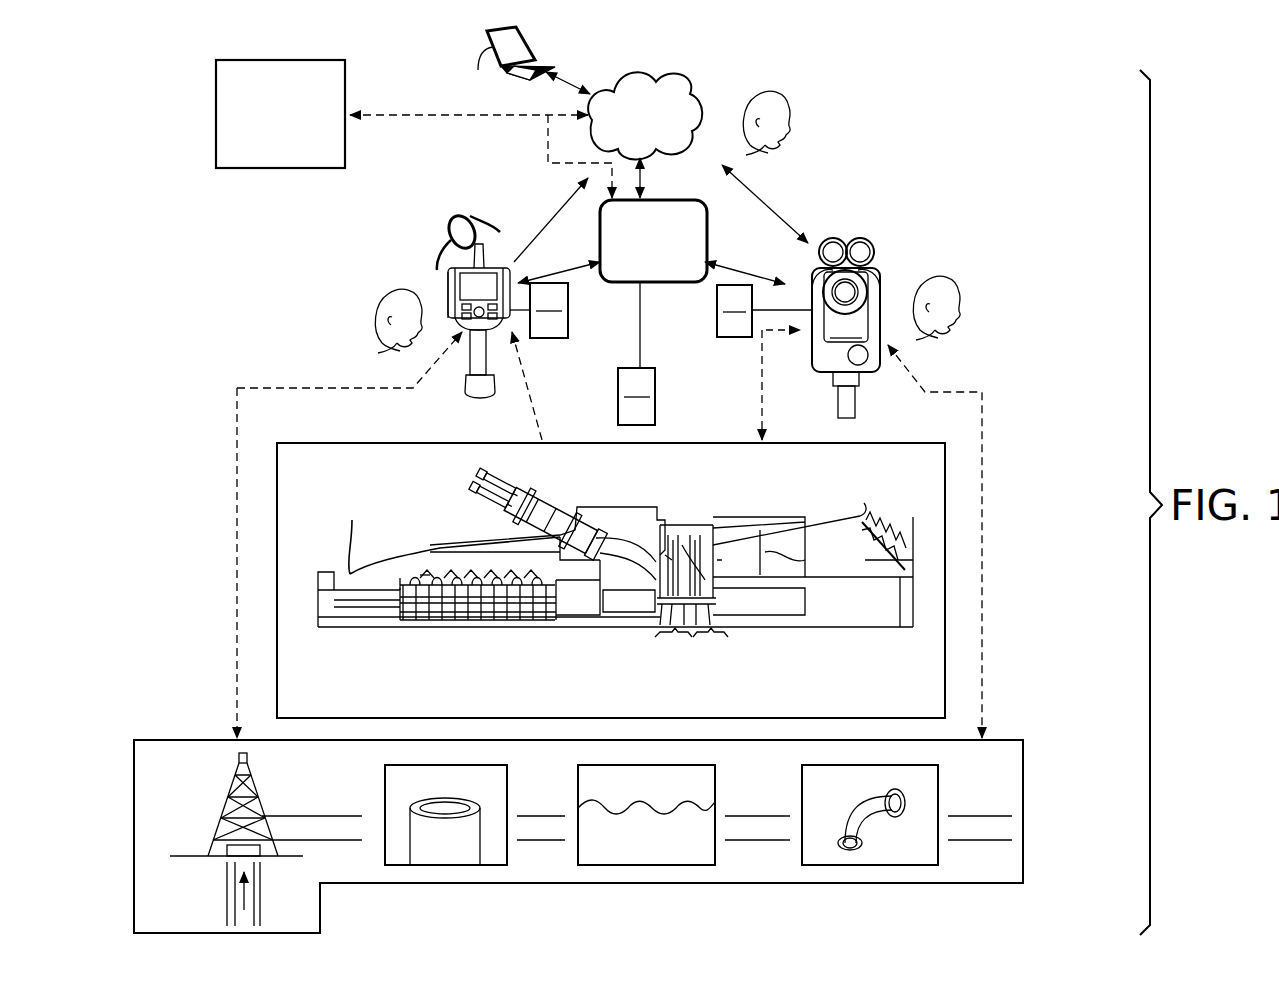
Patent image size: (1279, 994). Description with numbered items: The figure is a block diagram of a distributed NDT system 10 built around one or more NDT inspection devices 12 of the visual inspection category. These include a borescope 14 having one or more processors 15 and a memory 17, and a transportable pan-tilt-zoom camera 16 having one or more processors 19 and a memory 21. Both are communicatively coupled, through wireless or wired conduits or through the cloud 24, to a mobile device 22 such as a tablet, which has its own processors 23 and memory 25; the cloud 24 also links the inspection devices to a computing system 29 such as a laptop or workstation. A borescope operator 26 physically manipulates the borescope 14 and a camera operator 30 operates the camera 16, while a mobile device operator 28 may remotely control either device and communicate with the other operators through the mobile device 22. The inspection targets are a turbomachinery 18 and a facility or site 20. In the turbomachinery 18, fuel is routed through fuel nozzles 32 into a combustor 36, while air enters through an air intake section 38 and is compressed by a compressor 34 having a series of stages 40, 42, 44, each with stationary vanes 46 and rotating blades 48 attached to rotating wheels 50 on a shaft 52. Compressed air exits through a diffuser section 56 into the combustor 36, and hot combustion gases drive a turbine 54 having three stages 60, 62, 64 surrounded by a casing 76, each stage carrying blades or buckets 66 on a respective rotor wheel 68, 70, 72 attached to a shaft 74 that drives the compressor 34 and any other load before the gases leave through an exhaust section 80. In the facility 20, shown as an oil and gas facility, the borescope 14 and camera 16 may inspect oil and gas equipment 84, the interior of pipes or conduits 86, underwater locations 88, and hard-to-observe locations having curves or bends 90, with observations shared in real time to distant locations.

The distributed NDT system 10 is at (922, 113).
The NDT inspection device 12 is at (280, 60).
The borescope 14 is at (470, 392).
The processor 15 is at (568, 300).
The pan-tilt-zoom camera 16 is at (880, 268).
The memory 17 is at (568, 325).
The turbomachinery 18 is at (892, 444).
The processor 19 is at (717, 297).
The facility or site 20 is at (1025, 820).
The memory 21 is at (717, 324).
The mobile device 22 is at (664, 200).
The processor 23 is at (618, 386).
The cloud 24 is at (672, 71).
The memory 25 is at (618, 418).
The borescope operator 26 is at (393, 296).
The mobile device operator 28 is at (783, 88).
The computing system 29 is at (526, 66).
The camera operator 30 is at (946, 283).
The fuel nozzle 32 is at (540, 515).
The compressor 34 is at (433, 545).
The combustor 36 is at (480, 506).
The air intake section 38 is at (352, 574).
The compressor stage 40 is at (478, 633).
The compressor stage 42 is at (513, 632).
The compressor stage 44 is at (535, 633).
The stationary vane 46 is at (425, 575).
The blade 48 is at (412, 582).
The rotating wheel 50 is at (413, 612).
The shaft 52 is at (425, 603).
The turbine 54 is at (709, 500).
The diffuser section 56 is at (595, 582).
The turbine stage 60 is at (671, 649).
The turbine stage 62 is at (690, 625).
The turbine stage 64 is at (718, 649).
The turbine blade 66 is at (681, 540).
The rotor wheel 68 is at (672, 625).
The rotor wheel 70 is at (710, 618).
The rotor wheel 72 is at (730, 612).
The shaft 74 is at (632, 627).
The casing 76 is at (700, 546).
The exhaust section 80 is at (712, 500).
The oil and gas equipment 84 is at (205, 808).
The pipe or conduit 86 is at (507, 796).
The underwater location 88 is at (715, 793).
The curve or bend 90 is at (938, 796).